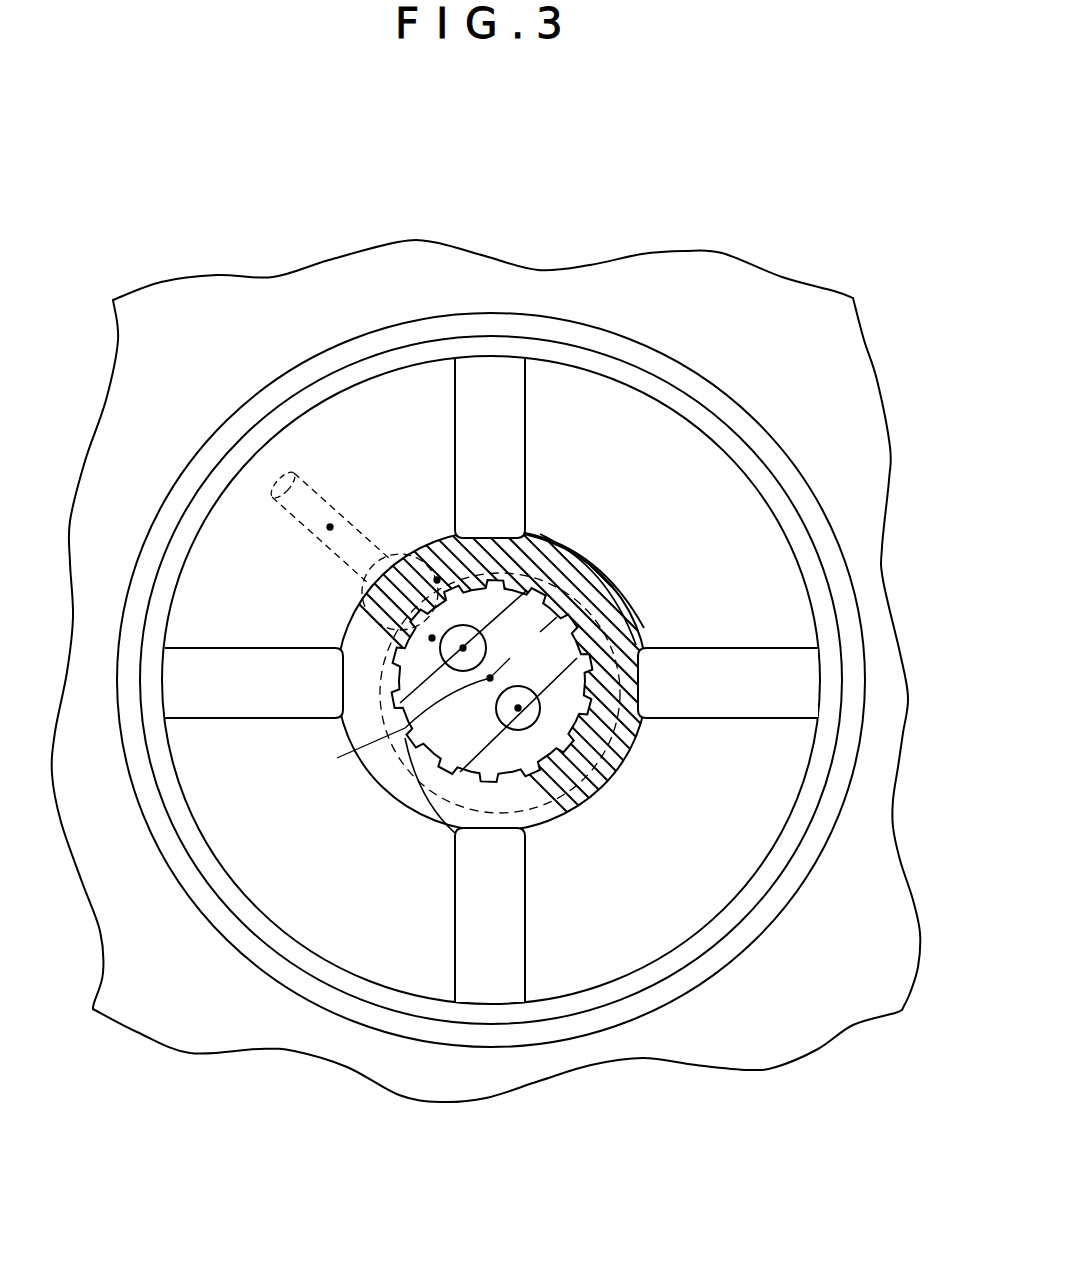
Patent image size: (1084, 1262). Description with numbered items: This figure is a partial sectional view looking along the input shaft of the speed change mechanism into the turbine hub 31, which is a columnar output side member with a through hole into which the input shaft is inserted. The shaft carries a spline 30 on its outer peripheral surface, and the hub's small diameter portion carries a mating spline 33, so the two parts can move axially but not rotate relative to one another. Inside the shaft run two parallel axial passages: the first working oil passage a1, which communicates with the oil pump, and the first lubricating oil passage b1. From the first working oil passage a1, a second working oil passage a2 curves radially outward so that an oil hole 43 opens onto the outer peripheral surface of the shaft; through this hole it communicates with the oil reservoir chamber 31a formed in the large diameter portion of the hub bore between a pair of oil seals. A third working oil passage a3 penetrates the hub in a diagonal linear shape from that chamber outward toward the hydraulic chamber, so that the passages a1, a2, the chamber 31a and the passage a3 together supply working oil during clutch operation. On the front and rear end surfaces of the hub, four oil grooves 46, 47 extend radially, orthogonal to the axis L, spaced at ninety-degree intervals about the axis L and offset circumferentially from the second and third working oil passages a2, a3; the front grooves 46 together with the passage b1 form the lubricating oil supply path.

The turbine hub 31 is at (697, 270).
The oil reservoir chamber 31a is at (416, 542).
The spline 30 is at (378, 792).
The spline 33 is at (418, 815).
The oil hole 43 is at (523, 531).
The oil grooves 46 is at (491, 680).
The oil grooves 47 is at (515, 455).
The first working oil passage a1 is at (463, 648).
The second working oil passage a2 is at (362, 662).
The third working oil passage a3 is at (335, 515).
The first lubricating oil passage b1 is at (518, 708).
The axis L is at (413, 718).